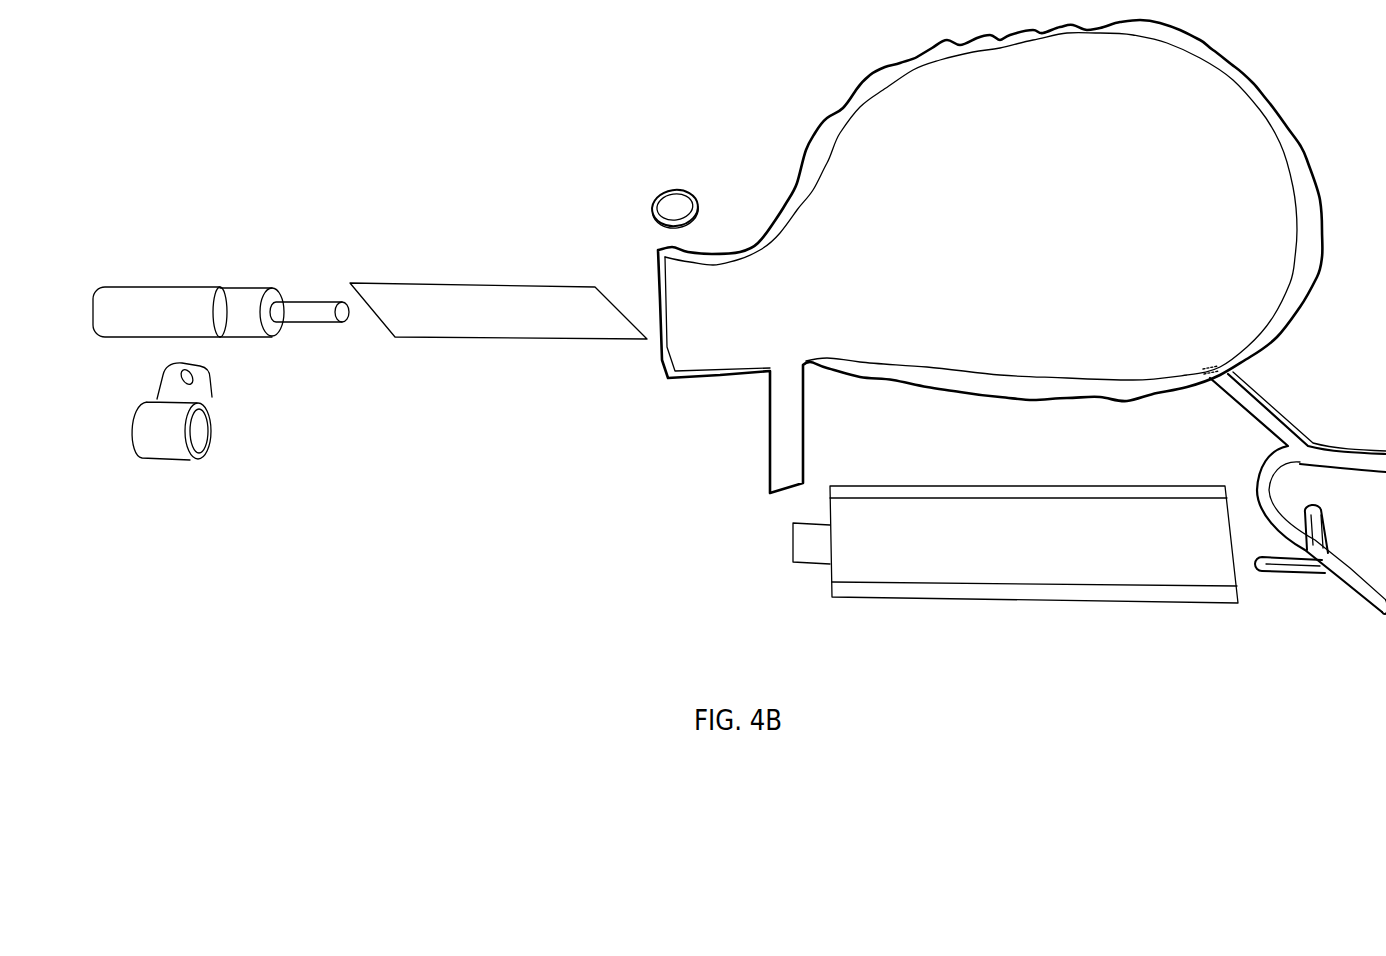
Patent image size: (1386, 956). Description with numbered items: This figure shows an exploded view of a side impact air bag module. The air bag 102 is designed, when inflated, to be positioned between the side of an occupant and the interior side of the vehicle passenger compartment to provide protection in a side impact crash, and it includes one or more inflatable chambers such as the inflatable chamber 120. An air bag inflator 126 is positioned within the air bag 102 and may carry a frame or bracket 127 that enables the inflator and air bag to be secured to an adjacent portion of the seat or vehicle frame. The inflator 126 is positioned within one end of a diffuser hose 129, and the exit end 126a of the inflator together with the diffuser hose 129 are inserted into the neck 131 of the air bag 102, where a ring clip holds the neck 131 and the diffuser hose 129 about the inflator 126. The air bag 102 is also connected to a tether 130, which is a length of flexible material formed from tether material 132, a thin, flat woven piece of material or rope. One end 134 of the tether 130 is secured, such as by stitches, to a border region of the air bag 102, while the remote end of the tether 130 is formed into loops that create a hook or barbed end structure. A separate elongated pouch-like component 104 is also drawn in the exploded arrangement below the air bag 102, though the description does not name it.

The air bag 102 is at (855, 78).
The pouch / pocket 104 is at (996, 492).
The inflatable chamber 120 is at (823, 203).
The air bag inflator 126 is at (162, 298).
The exit end 126a is at (315, 304).
The frame or bracket 127 is at (168, 462).
The diffuser hose 129 is at (465, 292).
The tether 130 is at (1253, 408).
The neck 131 is at (680, 352).
The tether material 132 is at (662, 195).
The one end of the tether 134 is at (1213, 367).